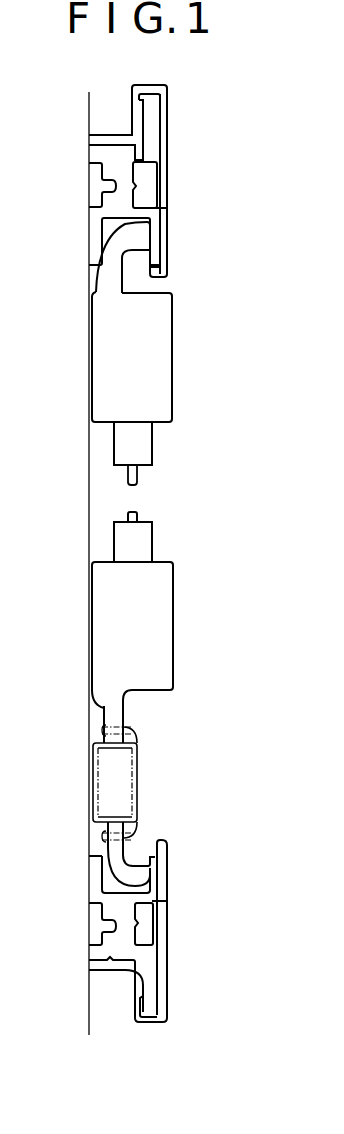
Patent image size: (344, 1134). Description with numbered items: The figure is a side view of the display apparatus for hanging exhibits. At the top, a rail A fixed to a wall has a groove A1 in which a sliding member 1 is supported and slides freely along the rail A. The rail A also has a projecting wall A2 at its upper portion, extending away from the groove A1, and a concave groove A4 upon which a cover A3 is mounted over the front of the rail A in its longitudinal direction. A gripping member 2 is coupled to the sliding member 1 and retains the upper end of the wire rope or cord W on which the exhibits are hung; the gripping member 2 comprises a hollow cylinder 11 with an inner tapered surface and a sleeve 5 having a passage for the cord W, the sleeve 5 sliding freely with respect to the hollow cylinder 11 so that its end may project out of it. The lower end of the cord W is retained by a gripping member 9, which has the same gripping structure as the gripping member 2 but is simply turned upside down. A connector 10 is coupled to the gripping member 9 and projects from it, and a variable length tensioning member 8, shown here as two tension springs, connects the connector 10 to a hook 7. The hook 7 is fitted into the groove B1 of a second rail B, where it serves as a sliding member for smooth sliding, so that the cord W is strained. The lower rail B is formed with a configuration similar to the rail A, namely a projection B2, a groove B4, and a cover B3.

The rail A is at (128, 181).
The groove A1 is at (98, 241).
The projecting wall A2 is at (152, 118).
The cover A3 is at (158, 188).
The concave groove A4 is at (143, 180).
The sliding member 1 is at (140, 242).
The gripping member 2 is at (171, 359).
The hollow cylinder 11 is at (158, 350).
The sleeve 5 is at (145, 443).
The wire rope or cord W is at (137, 478).
The gripping member 9 is at (174, 622).
The connector 10 is at (115, 717).
The variable length tensioning member 8 is at (137, 783).
The hook 7 is at (140, 878).
The second rail B is at (150, 964).
The groove B1 is at (112, 883).
The projection B2 is at (152, 1012).
The cover B3 is at (163, 930).
The groove B4 is at (142, 940).